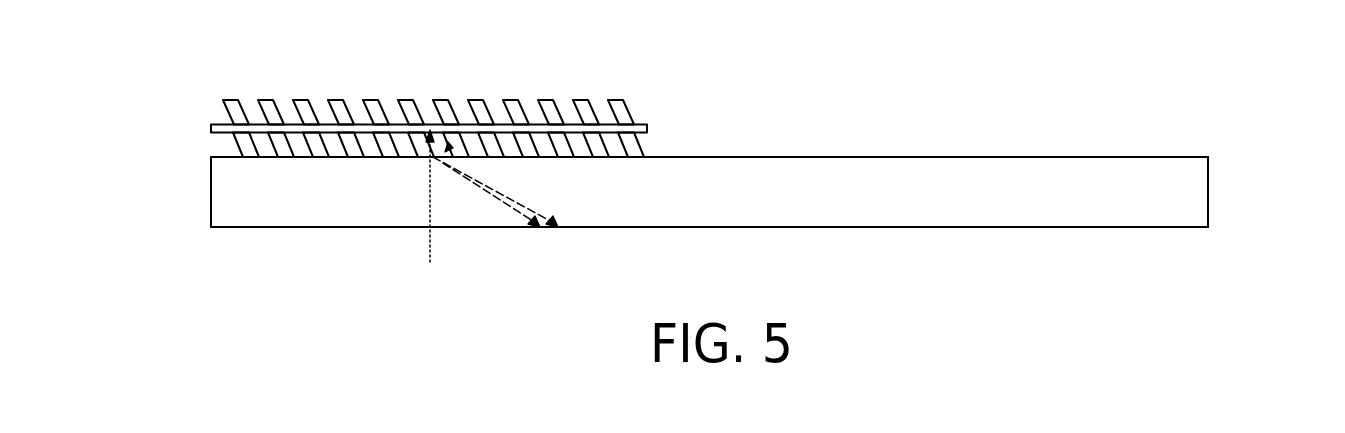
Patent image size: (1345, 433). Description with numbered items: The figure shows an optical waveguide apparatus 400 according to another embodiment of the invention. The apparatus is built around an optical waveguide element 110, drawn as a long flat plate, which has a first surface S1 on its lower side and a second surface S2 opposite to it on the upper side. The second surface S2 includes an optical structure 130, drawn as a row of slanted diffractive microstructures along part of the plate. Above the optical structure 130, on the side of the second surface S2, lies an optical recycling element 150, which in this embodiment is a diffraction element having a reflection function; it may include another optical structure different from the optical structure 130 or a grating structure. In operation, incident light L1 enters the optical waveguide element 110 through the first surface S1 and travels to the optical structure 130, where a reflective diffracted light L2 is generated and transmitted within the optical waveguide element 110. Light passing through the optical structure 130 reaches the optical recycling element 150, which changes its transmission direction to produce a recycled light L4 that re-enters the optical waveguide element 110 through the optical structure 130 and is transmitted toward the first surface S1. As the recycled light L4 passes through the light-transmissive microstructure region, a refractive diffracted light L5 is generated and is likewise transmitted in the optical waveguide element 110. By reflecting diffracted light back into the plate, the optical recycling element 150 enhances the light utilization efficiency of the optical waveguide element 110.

The optical waveguide element 110 is at (1190, 193).
The optical structure 130 is at (197, 123).
The optical recycling element 150 is at (647, 128).
The optical waveguide apparatus 400 is at (1320, 345).
The first surface S1 is at (951, 228).
The second surface S2 is at (951, 156).
The incident light L1 is at (431, 222).
The reflective diffracted light L2 is at (497, 196).
The recycled light L4 is at (449, 145).
The refractive diffracted light L5 is at (511, 196).